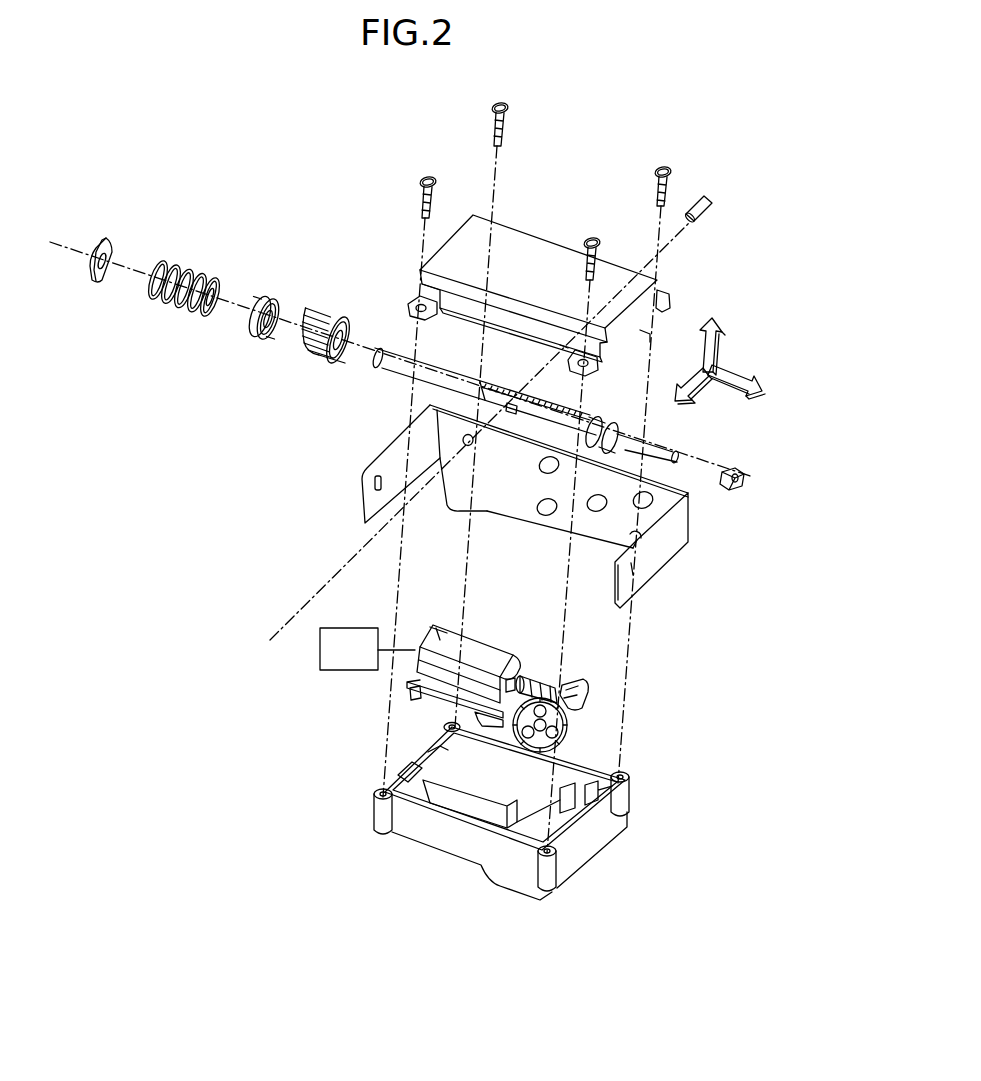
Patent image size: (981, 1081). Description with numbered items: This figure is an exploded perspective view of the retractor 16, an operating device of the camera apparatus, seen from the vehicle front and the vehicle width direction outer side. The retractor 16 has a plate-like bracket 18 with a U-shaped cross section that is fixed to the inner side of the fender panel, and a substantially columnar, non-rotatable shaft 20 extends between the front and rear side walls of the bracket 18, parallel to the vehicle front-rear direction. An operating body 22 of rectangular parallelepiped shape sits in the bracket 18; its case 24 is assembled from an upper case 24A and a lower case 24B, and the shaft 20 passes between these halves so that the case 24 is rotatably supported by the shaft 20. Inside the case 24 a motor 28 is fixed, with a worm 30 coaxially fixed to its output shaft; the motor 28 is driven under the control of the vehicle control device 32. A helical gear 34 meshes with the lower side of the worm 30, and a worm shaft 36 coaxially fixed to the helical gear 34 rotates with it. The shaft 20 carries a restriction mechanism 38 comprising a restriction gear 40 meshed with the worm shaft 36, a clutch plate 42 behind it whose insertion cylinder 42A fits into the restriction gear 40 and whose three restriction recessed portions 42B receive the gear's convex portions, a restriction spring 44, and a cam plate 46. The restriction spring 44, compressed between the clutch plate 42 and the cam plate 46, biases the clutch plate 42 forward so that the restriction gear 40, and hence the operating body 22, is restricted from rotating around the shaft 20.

The retractor 16 is at (731, 265).
The bracket 18 is at (690, 520).
The shaft 20 is at (425, 368).
The operating body 22 is at (629, 885).
The case 24 is at (516, 522).
The upper case 24A is at (542, 238).
The lower case 24B is at (443, 866).
The motor 28 is at (483, 637).
The worm 30 is at (550, 680).
The control device 32 is at (370, 628).
The helical gear 34 is at (573, 733).
The worm shaft 36 is at (570, 680).
The restriction mechanism 38 is at (223, 236).
The restriction gear 40 is at (335, 316).
The clutch plate 42 is at (268, 297).
The insertion cylinder 42A is at (282, 308).
The restriction recessed portion 42B is at (274, 300).
The restriction spring 44 is at (156, 262).
The cam plate 46 is at (102, 237).